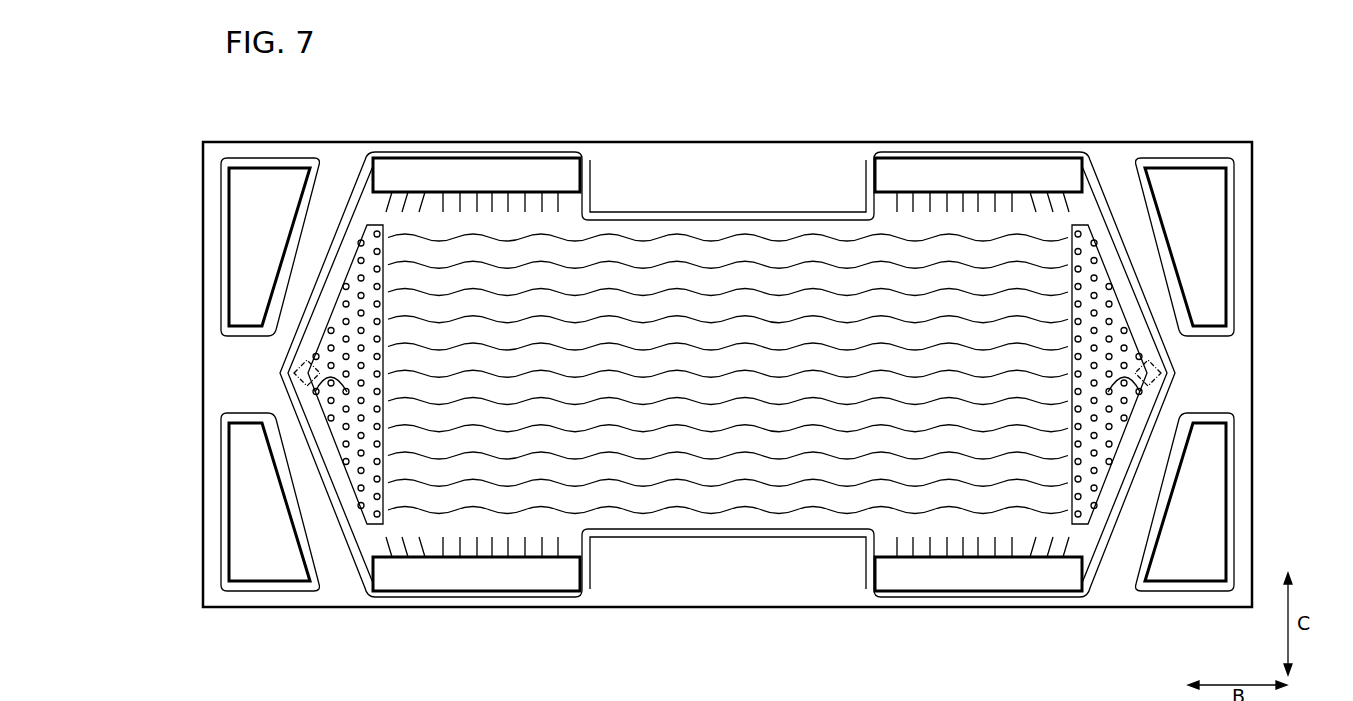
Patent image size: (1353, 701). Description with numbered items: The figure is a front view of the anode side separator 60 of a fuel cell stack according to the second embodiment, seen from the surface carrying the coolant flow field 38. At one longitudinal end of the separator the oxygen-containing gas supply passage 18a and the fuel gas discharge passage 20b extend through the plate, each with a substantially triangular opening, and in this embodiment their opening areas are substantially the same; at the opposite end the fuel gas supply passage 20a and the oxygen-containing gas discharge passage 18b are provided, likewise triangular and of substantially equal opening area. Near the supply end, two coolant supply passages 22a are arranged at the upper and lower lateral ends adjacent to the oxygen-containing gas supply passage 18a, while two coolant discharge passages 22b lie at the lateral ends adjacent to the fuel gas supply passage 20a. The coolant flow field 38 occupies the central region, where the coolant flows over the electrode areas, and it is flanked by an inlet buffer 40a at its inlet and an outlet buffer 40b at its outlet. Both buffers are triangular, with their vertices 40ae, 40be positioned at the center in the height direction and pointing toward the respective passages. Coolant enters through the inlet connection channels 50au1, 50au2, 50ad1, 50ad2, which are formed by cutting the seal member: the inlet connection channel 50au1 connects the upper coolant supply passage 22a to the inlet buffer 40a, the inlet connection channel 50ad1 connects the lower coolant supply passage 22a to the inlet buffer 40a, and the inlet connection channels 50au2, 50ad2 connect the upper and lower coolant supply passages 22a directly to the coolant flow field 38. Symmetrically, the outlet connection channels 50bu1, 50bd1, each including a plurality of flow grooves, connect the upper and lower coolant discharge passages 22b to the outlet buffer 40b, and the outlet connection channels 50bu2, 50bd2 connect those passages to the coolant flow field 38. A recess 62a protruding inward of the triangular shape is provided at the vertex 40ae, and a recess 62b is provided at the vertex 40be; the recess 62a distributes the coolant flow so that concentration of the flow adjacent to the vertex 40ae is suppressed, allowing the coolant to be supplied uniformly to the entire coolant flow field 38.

The anode side separator 60 is at (547, 67).
The oxygen-containing gas supply passage 18a is at (252, 187).
The oxygen-containing gas discharge passage 18b is at (1180, 565).
The fuel gas supply passage 20a is at (1205, 192).
The fuel gas discharge passage 20b is at (265, 563).
The coolant supply passage 22a is at (478, 170).
The coolant discharge passage 22b is at (977, 172).
The coolant flow field 38 is at (707, 280).
The inlet buffer 40a is at (335, 342).
The outlet buffer 40b is at (1120, 342).
The vertex 40ae is at (294, 373).
The vertex 40be is at (1161, 373).
The recess 62a is at (320, 390).
The recess 62b is at (1135, 390).
The inlet connection channel 50au1 is at (405, 192).
The inlet connection channel 50au2 is at (549, 198).
The inlet connection channel 50ad1 is at (405, 548).
The inlet connection channel 50ad2 is at (550, 548).
The outlet connection channel 50bu1 is at (1050, 197).
The outlet connection channel 50bu2 is at (905, 197).
The outlet connection channel 50bd1 is at (1050, 548).
The outlet connection channel 50bd2 is at (900, 548).